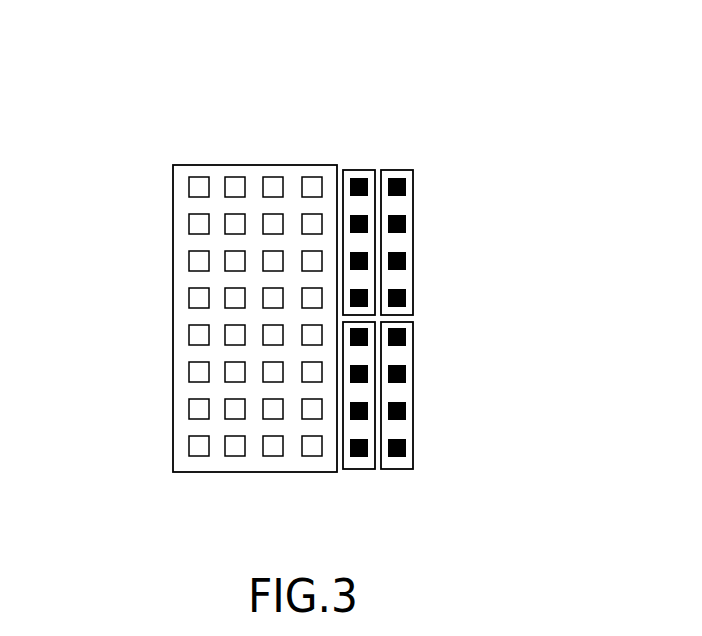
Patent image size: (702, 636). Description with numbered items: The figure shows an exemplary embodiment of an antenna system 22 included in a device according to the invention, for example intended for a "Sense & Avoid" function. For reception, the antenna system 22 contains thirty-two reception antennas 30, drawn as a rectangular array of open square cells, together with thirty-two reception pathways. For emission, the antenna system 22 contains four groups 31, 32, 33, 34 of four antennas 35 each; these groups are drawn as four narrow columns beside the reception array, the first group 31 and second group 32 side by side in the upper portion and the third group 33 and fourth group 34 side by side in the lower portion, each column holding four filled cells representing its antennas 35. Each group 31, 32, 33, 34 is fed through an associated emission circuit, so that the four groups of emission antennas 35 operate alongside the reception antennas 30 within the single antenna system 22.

The antenna system 22 is at (147, 143).
The reception antenna 30 is at (198, 262).
The first group of emission antennas 31 is at (360, 170).
The second group of emission antennas 32 is at (413, 245).
The third group of emission antennas 33 is at (360, 468).
The fourth group of emission antennas 34 is at (413, 390).
The emission antenna 35 is at (407, 293).